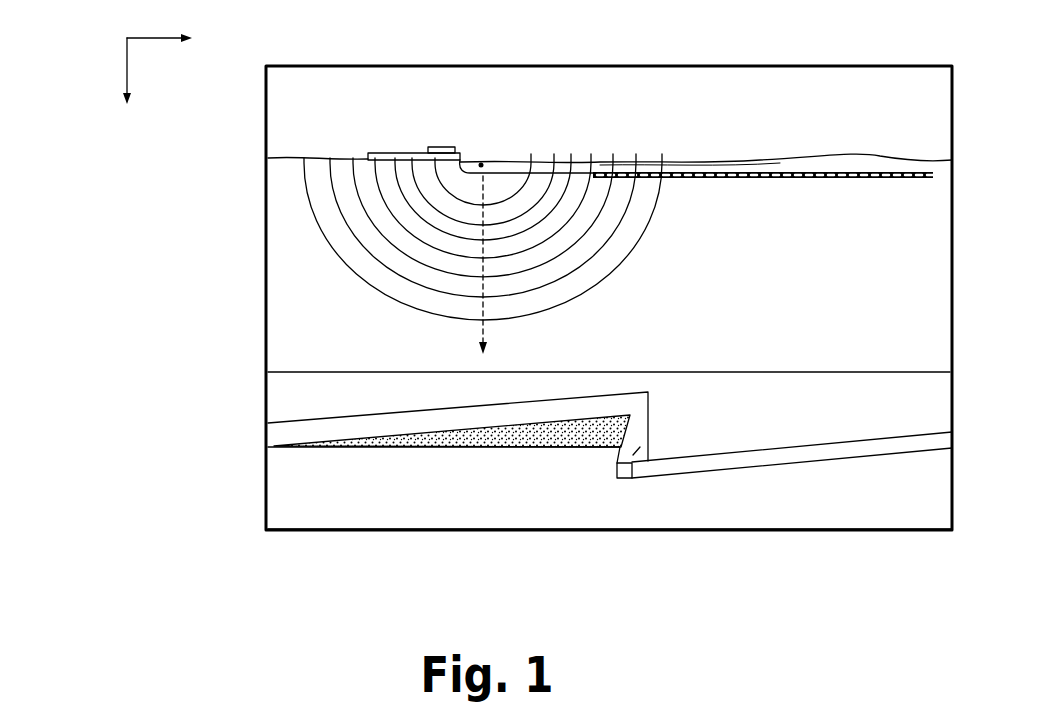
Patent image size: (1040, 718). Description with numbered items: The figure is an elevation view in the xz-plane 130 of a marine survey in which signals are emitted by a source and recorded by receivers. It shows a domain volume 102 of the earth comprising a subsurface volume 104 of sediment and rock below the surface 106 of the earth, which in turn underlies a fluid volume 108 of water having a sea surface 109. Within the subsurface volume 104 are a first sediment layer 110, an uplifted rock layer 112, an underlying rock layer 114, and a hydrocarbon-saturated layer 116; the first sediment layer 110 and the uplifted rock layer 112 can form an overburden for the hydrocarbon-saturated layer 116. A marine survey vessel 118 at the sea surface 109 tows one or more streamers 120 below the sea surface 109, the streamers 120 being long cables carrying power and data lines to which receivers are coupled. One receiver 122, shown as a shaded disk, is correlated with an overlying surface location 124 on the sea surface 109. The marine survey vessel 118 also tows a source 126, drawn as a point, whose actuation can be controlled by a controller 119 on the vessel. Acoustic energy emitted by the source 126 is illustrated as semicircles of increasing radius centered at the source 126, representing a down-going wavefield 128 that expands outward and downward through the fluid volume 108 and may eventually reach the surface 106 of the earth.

The domain volume 102 is at (222, 197).
The subsurface volume 104 is at (283, 392).
The surface 106 is at (312, 371).
The fluid volume 108 is at (283, 292).
The sea surface 109 is at (723, 160).
The first sediment layer 110 is at (838, 416).
The uplifted rock layer 112 is at (280, 440).
The underlying rock layer 114 is at (363, 518).
The hydrocarbon-saturated layer 116 is at (455, 448).
The marine survey vessel 118 is at (407, 153).
The controller 119 is at (448, 147).
The streamers 120 is at (769, 203).
The receiver 122 is at (867, 180).
The surface location 124 is at (873, 157).
The source 126 is at (485, 162).
The down-going wavefield 128 is at (627, 255).
The xz-plane 130 is at (127, 38).